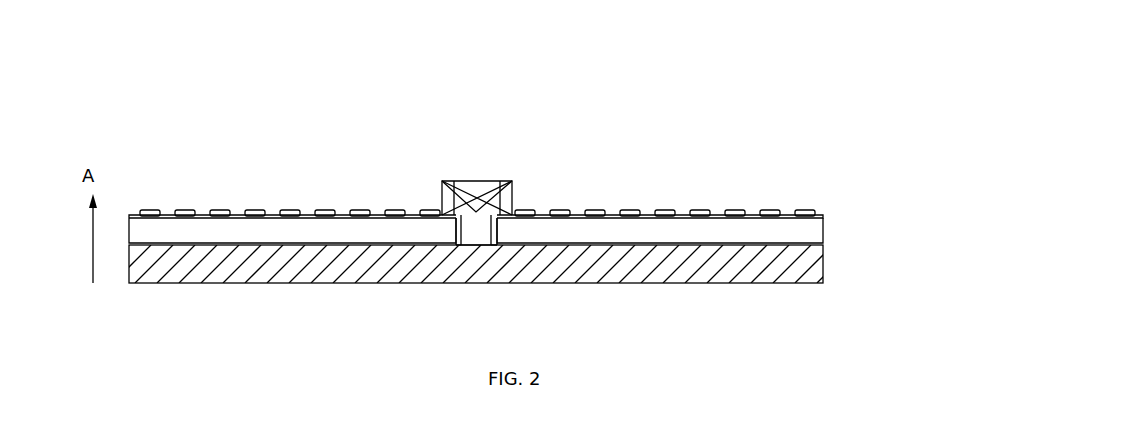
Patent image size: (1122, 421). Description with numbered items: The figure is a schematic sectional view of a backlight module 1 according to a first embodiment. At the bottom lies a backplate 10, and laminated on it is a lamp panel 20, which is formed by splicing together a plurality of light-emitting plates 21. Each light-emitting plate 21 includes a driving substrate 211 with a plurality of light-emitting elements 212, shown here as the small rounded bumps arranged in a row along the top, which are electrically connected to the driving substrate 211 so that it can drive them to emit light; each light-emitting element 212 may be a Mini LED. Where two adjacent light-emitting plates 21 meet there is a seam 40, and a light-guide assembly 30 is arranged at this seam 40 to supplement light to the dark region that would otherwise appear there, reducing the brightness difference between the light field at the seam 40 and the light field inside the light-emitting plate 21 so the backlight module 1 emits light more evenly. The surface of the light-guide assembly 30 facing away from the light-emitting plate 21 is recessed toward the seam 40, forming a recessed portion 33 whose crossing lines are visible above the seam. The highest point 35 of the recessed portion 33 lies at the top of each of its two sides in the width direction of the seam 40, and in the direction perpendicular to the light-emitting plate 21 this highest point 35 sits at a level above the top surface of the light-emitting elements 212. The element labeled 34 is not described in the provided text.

The backlight module 1 is at (172, 103).
The backplate 10 is at (180, 270).
The lamp panel 20 is at (687, 207).
The light-emitting plate 21 is at (547, 243).
The driving substrate 211 is at (813, 230).
The light-emitting elements 212 is at (818, 210).
The light-guide assembly 30 is at (478, 225).
The recessed portion 33 is at (468, 182).
The wire 34 is at (475, 205).
The highest point 35 is at (507, 182).
The seam 40 is at (502, 240).